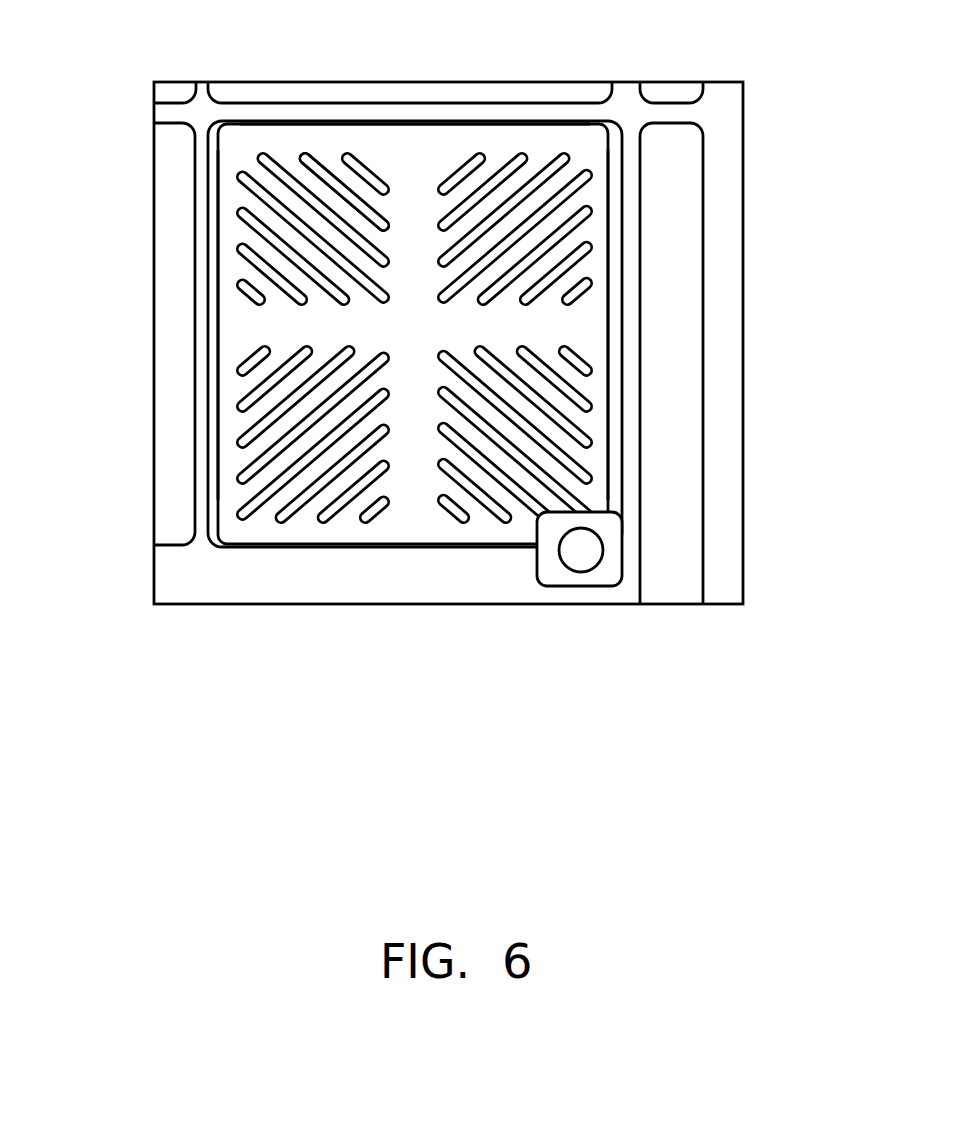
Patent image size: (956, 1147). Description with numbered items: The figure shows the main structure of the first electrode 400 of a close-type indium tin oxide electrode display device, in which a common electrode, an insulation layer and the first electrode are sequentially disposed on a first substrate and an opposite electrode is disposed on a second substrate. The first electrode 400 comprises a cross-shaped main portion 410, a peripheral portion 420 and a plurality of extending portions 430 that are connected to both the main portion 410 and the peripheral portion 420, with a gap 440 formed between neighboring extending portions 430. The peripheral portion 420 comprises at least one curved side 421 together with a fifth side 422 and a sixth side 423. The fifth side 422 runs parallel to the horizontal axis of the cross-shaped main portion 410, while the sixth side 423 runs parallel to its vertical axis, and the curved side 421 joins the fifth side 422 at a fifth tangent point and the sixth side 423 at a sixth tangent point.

The first electrode 400 is at (210, 76).
The cross-shaped main portion 410 is at (245, 330).
The peripheral portion 420 is at (265, 138).
The curved side 421 is at (605, 124).
The fifth side 422 is at (516, 122).
The sixth side 423 is at (610, 217).
The extending portions 430 is at (306, 178).
The gap 440 is at (296, 180).